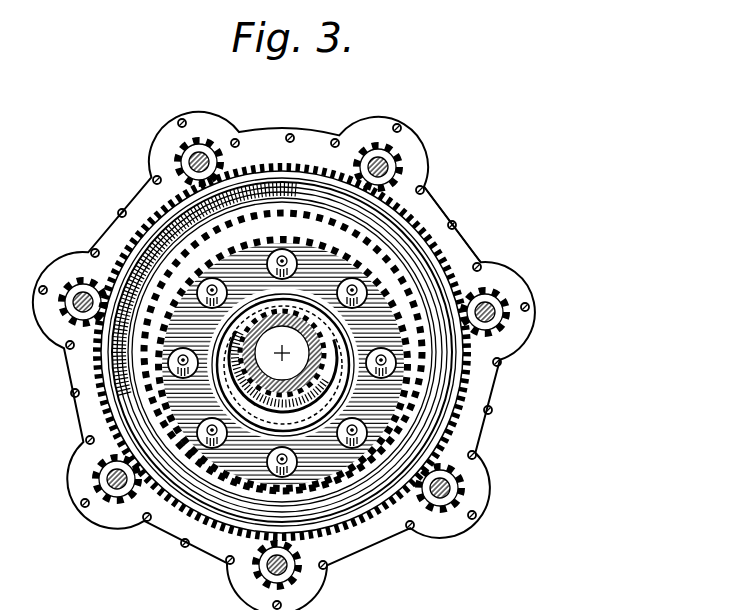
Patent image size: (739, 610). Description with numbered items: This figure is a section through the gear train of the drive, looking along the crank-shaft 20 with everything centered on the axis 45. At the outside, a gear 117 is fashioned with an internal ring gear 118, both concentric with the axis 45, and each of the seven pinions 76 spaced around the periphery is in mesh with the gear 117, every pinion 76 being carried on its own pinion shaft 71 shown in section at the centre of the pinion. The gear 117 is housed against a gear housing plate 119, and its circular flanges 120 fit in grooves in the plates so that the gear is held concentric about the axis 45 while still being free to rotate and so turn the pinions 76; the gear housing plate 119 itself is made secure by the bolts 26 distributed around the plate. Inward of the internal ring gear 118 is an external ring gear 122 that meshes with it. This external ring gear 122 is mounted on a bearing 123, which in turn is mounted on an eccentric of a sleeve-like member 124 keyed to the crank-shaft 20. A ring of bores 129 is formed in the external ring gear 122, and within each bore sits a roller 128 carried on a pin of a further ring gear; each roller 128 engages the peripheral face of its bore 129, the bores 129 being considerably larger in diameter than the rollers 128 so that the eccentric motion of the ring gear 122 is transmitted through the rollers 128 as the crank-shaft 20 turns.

The crank-shaft 20 is at (271, 305).
The bolts 26 is at (238, 140).
The axis 45 is at (282, 353).
The pinion shaft 71 is at (195, 159).
The pinions 76 is at (177, 153).
The gear 117 is at (132, 238).
The internal ring gear 118 is at (425, 387).
The gear housing plate 119 is at (433, 214).
The circular flanges 120 is at (337, 498).
The external ring gear 122 is at (415, 419).
The bearing 123 is at (337, 388).
The sleeve-like member 124 is at (338, 355).
The rollers 128 is at (218, 274).
The bores 129 is at (303, 255).